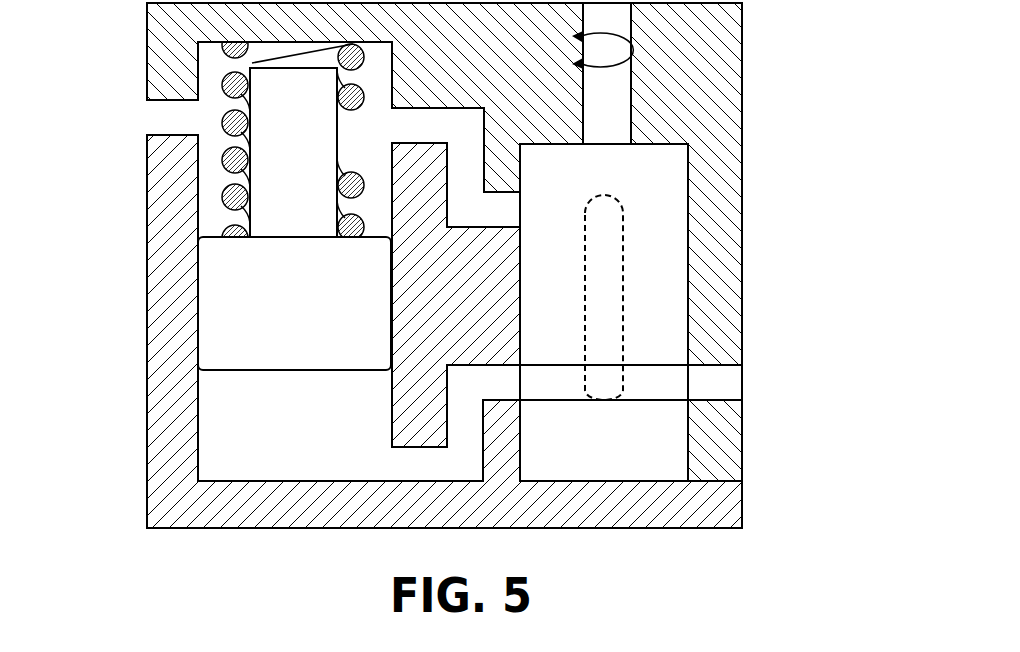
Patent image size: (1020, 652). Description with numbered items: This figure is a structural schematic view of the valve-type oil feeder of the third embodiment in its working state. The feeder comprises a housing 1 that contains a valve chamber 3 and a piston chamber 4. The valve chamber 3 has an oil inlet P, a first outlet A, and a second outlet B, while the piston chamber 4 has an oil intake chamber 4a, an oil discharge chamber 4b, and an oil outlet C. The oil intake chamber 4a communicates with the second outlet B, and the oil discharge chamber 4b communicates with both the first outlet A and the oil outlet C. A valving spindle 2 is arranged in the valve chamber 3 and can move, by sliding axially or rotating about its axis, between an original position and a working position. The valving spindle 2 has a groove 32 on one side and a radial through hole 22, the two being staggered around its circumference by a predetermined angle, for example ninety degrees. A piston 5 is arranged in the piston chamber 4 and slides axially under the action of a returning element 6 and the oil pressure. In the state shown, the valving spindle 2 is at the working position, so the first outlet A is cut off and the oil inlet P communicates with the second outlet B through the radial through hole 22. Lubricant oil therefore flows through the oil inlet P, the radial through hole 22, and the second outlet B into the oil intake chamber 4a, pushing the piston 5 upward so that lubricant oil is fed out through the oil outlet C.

The housing 1 is at (647, 128).
The valving spindle 2 is at (593, 198).
The valve chamber 3 is at (690, 253).
The groove 32 is at (608, 318).
The piston chamber 4 is at (197, 320).
The oil intake chamber 4a is at (222, 430).
The oil discharge chamber 4b is at (213, 180).
The piston 5 is at (260, 137).
The returning element 6 is at (222, 72).
The radial through hole 22 is at (647, 387).
The first outlet A is at (520, 198).
The second outlet B is at (510, 378).
The oil outlet C is at (163, 117).
The oil inlet P is at (728, 383).